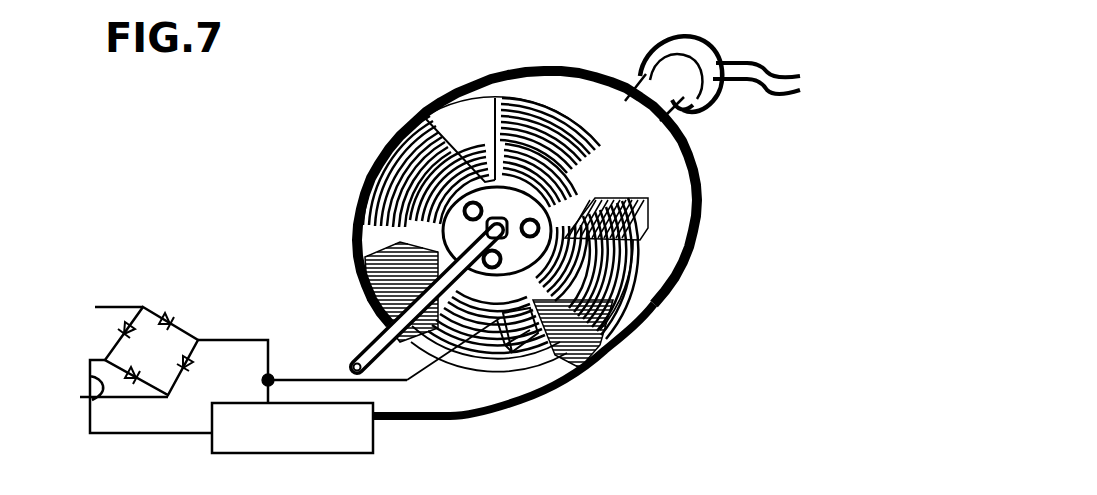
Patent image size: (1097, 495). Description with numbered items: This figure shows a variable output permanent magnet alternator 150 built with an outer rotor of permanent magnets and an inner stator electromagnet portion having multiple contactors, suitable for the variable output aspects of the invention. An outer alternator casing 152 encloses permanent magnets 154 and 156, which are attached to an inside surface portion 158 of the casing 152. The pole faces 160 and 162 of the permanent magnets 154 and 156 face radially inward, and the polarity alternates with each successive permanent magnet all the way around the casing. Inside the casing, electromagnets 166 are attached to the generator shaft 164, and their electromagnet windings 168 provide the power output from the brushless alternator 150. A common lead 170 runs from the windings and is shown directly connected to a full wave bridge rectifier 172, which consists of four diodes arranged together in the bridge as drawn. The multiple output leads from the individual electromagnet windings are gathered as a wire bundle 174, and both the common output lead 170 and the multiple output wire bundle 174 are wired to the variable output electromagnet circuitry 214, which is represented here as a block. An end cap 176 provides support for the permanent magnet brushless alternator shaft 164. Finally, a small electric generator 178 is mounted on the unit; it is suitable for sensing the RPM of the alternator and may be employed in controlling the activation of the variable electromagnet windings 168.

The variable output permanent magnet alternator 150 is at (648, 255).
The outer alternator casing 152 is at (697, 220).
The permanent magnet 154 is at (355, 225).
The permanent magnet 156 is at (592, 366).
The inside surface portion 158 is at (505, 348).
The pole face 160 is at (367, 267).
The pole face 162 is at (602, 343).
The generator shaft 164 is at (378, 332).
The electromagnets 166 is at (362, 185).
The electromagnet windings 168 is at (397, 140).
The common lead 170 is at (343, 377).
The full wave bridge rectifier 172 is at (148, 322).
The wire bundle 174 is at (552, 392).
The end cap 176 is at (690, 170).
The small electric generator 178 is at (710, 62).
The variable output electromagnet circuitry 214 is at (373, 428).